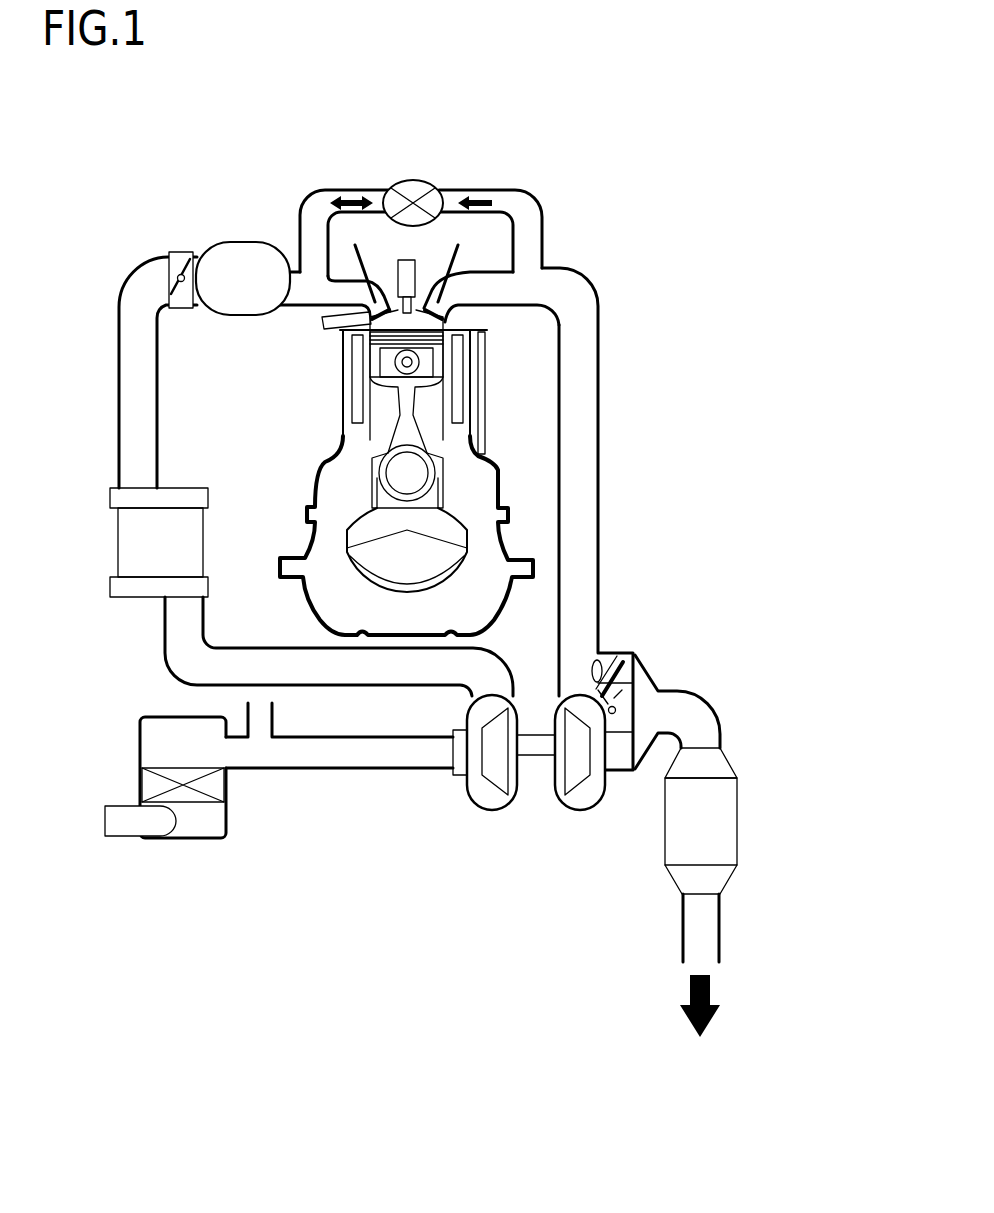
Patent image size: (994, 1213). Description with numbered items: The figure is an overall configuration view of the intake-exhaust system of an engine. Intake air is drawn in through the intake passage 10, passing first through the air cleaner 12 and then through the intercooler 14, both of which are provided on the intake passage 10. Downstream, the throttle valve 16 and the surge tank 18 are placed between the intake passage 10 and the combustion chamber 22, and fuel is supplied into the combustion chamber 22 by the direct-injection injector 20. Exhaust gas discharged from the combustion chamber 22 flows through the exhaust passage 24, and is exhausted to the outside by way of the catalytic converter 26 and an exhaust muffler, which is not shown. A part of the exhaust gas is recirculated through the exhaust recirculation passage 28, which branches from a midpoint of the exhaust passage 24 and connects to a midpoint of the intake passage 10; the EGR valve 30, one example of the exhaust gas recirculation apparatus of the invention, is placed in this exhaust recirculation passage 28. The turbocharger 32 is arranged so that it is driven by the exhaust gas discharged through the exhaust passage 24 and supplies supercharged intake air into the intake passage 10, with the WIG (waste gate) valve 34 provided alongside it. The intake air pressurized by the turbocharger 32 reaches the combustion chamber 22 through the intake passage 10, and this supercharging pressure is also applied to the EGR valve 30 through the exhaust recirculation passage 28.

The intake passage 10 is at (130, 402).
The air cleaner 12 is at (193, 828).
The intercooler 14 is at (125, 542).
The throttle valve 16 is at (185, 250).
The surge tank 18 is at (247, 250).
The direct-injection injector 20 is at (330, 327).
The combustion chamber 22 is at (420, 328).
The exhaust passage 24 is at (583, 425).
The catalytic converter 26 is at (730, 805).
The exhaust recirculation passage 28 is at (306, 207).
The EGR valve 30 is at (423, 180).
The turbocharger 32 is at (538, 765).
The WIG (waste gate) valve 34 is at (610, 660).